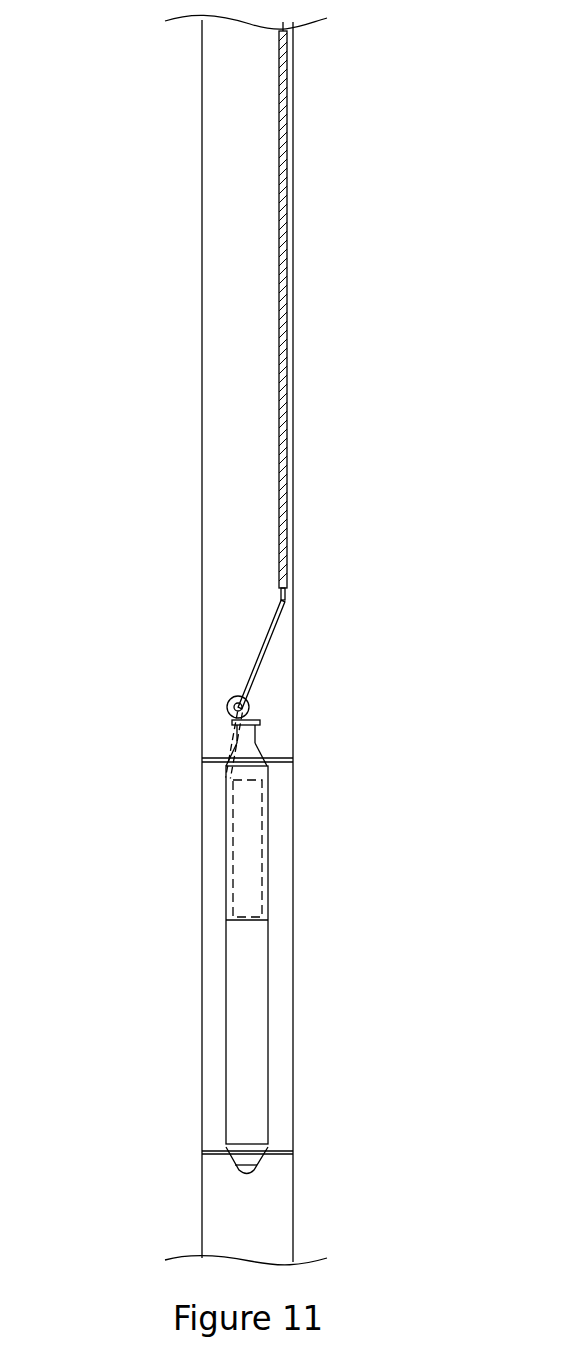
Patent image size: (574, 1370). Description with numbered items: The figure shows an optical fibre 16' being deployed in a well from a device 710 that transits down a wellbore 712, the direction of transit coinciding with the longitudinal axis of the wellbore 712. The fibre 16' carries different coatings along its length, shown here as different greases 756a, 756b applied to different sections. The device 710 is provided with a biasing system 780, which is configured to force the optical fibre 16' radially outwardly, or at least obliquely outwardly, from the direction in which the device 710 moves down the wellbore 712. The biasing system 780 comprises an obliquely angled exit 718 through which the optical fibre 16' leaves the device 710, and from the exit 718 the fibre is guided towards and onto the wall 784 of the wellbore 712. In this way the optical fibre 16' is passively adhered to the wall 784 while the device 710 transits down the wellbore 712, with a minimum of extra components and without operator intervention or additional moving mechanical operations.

The wellbore 712 is at (202, 643).
The grease 756a is at (287, 509).
The optical fibre 16' is at (321, 586).
The grease 756b is at (268, 645).
The biasing system 780 is at (227, 707).
The obliquely angled exit 718 is at (258, 738).
The device 710 is at (268, 983).
The wall of the wellbore 784 is at (293, 1044).